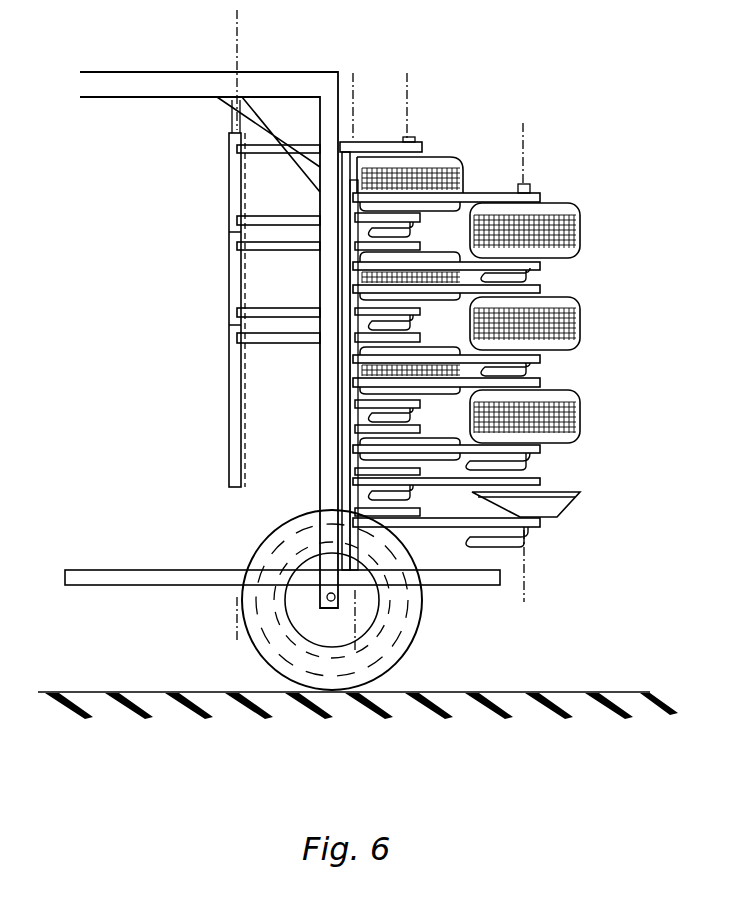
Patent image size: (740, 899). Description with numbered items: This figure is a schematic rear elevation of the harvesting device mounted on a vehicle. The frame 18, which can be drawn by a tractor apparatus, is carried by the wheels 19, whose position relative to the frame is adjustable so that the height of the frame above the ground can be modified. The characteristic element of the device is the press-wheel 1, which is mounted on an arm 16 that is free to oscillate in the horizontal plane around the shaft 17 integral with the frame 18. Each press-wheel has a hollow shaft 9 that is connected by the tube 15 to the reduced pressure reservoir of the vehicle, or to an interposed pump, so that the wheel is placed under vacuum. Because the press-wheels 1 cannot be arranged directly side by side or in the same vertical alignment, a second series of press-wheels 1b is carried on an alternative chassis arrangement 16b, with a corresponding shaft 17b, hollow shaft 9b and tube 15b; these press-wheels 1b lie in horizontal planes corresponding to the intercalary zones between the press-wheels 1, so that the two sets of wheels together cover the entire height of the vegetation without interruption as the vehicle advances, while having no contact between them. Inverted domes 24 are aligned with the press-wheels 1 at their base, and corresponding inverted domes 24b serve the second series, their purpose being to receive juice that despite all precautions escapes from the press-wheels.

The wheel 1 is at (570, 212).
The press-wheel 1b is at (445, 156).
The hollow shaft 9 is at (528, 184).
The hollow shaft 9b is at (413, 139).
The tube 15 is at (528, 273).
The tube 15b is at (413, 229).
The arm 16 is at (472, 193).
The alternative chassis arrangement 16b is at (263, 152).
The shaft 17 is at (364, 141).
The shaft 17b is at (233, 123).
The frame 18 is at (313, 82).
The wheels 19 is at (395, 640).
The inverted dome 24 is at (557, 510).
The inverted dome 24b is at (422, 463).